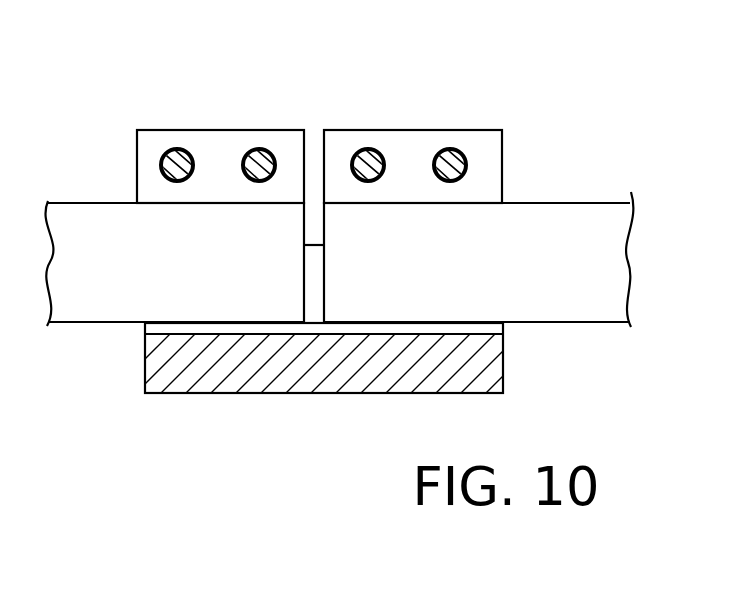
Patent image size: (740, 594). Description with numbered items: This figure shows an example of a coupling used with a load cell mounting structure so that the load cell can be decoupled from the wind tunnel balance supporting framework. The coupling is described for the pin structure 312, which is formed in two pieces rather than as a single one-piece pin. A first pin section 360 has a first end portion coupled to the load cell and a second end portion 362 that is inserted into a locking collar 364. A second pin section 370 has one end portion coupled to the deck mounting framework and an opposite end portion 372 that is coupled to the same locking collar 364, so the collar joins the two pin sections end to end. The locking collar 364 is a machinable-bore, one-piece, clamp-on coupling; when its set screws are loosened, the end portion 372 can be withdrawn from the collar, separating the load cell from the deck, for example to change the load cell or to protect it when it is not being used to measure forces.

The pin structure 312 is at (342, 110).
The first pin section 360 is at (563, 216).
The second end portion 362 is at (362, 245).
The locking collar 364 is at (222, 136).
The second pin section 370 is at (102, 305).
The opposite end portion 372 is at (251, 315).